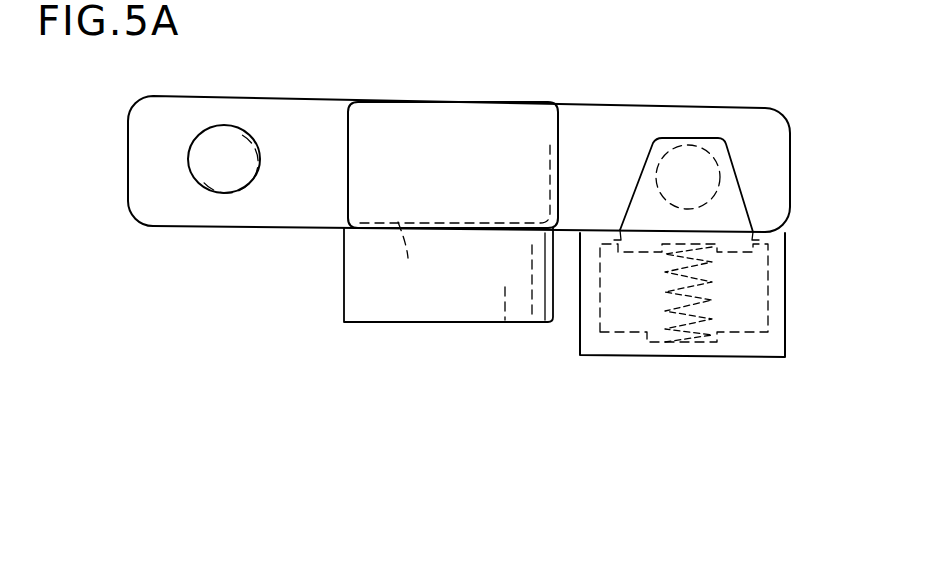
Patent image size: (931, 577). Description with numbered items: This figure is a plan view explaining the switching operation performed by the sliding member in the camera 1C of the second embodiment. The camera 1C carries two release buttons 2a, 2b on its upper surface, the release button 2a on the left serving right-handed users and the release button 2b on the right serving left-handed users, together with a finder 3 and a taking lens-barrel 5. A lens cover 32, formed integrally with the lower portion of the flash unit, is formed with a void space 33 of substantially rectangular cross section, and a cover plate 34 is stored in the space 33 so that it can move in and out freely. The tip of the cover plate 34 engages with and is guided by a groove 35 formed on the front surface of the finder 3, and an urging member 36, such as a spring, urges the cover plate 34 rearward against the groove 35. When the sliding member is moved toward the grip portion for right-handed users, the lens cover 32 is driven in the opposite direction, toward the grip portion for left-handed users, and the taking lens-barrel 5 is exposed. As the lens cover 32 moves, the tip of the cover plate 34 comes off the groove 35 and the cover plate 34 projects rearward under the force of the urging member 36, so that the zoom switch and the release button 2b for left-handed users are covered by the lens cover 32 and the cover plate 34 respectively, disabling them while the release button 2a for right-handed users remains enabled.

The camera 1C is at (278, 95).
The release button 2a is at (228, 183).
The release button 2b is at (713, 188).
The finder 3 is at (538, 117).
The taking lens-barrel 5 is at (490, 307).
The lens cover 32 is at (784, 325).
The void space 33 is at (602, 294).
The cover plate 34 is at (722, 147).
The groove 35 is at (408, 258).
The urging member 36 is at (707, 304).